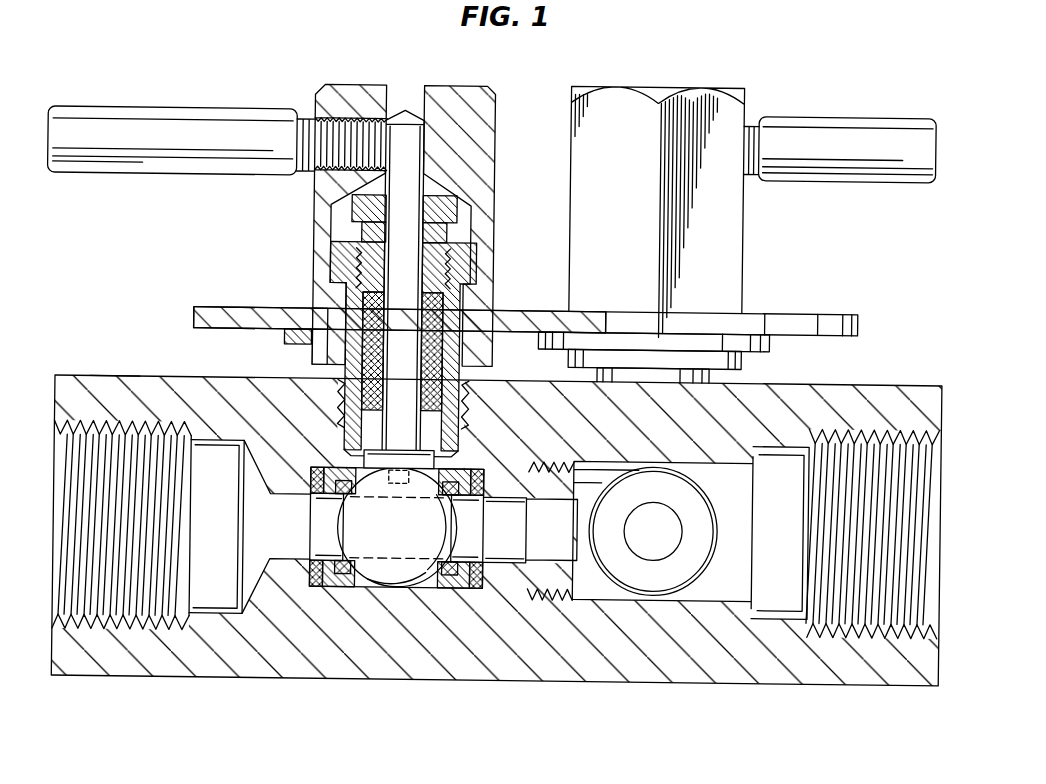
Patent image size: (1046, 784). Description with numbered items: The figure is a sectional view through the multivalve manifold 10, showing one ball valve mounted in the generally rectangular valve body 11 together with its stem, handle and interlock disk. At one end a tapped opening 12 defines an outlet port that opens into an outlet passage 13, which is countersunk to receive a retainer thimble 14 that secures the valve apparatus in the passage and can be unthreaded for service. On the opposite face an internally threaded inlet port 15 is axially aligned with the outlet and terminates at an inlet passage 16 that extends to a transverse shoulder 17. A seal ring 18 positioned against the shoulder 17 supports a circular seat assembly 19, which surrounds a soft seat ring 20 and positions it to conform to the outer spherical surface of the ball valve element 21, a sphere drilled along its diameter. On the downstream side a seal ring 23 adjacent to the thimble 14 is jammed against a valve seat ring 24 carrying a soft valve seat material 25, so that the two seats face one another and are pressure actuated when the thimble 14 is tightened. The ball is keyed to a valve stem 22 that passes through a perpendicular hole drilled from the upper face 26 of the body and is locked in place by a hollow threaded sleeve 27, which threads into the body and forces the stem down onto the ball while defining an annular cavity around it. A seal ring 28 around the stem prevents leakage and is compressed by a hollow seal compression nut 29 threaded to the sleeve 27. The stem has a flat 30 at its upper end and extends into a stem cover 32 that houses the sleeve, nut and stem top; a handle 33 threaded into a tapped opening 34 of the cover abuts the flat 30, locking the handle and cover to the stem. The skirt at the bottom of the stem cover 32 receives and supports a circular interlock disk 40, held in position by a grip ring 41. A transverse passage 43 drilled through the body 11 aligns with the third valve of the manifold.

The multivalve manifold 10 is at (186, 724).
The valve body 11 is at (684, 677).
The tapped opening 12 is at (825, 540).
The outlet passage 13 is at (604, 593).
The retainer thimble 14 is at (566, 583).
The inlet port 15 is at (100, 630).
The inlet passage 16 is at (285, 517).
The transverse shoulder 17 is at (312, 583).
The seal ring 18 is at (325, 470).
The seat assembly 19 is at (333, 583).
The seat ring 20 is at (352, 583).
The ball valve element 21 is at (405, 583).
The valve stem 22 is at (403, 273).
The seal ring 23 is at (480, 583).
The valve seat ring 24 is at (458, 583).
The soft valve seat material 25 is at (436, 483).
The upper face 26 is at (100, 374).
The hollow threaded sleeve 27 is at (278, 378).
The seal ring 28 is at (466, 340).
The seal compression nut 29 is at (349, 203).
The flat 30 is at (400, 109).
The stem cover 32 is at (482, 95).
The handle 33 is at (122, 173).
The tapped opening 34 is at (314, 100).
The circular disk 40 is at (200, 305).
The grip ring 41 is at (280, 310).
The transverse passage 43 is at (687, 520).